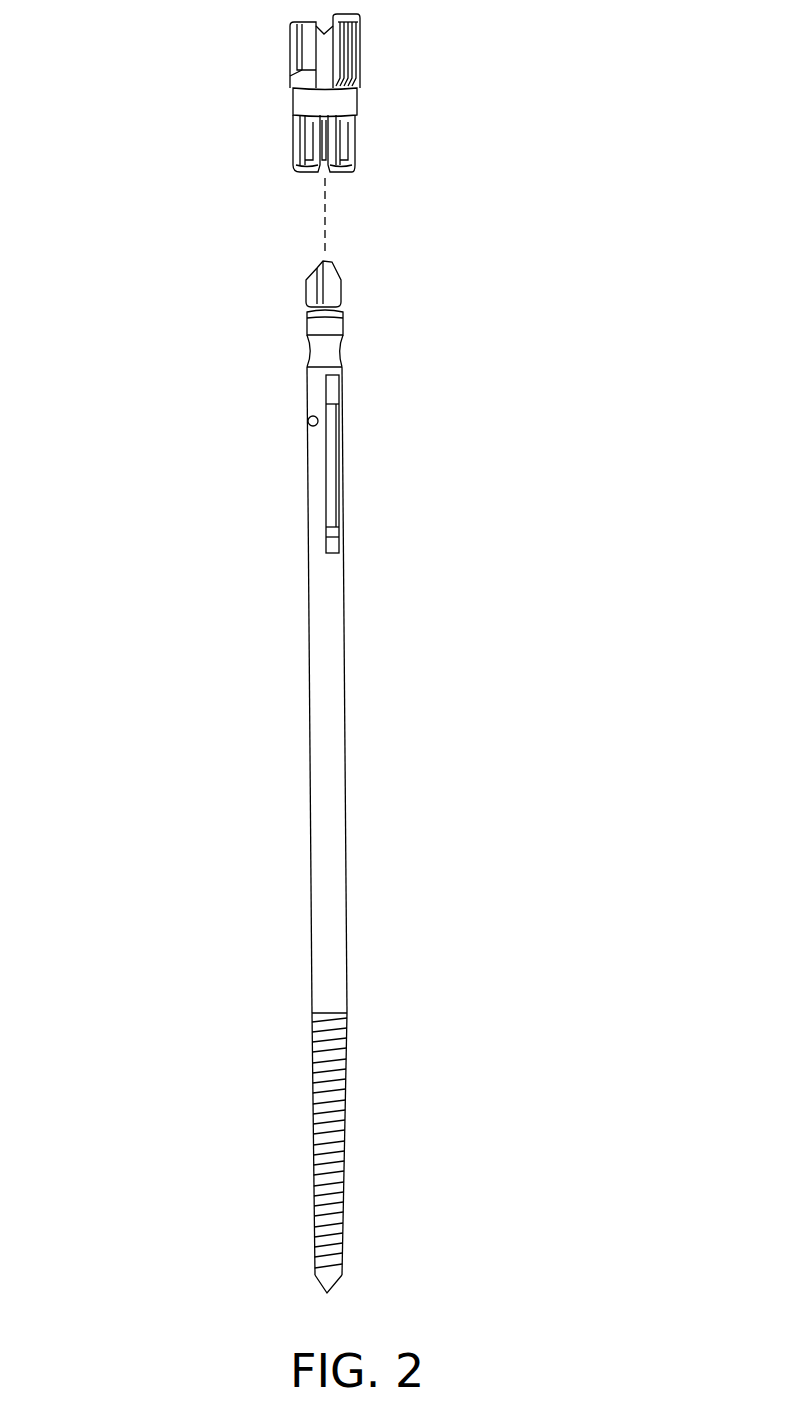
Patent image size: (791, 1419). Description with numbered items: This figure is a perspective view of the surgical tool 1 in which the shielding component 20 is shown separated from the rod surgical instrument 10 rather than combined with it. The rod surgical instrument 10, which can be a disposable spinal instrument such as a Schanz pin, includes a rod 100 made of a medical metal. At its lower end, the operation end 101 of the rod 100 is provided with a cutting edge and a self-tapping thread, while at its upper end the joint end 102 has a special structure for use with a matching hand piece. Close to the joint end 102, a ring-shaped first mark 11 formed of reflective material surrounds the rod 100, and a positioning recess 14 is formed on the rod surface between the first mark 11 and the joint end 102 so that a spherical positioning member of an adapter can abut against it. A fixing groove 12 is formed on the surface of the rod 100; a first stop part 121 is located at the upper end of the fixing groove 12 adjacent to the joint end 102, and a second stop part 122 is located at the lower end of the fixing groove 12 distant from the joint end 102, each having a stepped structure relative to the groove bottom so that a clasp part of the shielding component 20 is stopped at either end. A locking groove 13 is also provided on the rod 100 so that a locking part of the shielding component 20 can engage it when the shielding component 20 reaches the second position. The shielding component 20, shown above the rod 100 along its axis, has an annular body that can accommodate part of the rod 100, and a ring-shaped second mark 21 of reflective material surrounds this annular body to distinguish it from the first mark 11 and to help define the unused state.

The surgical tool 1 is at (99, 92).
The rod surgical instrument 10 is at (361, 687).
The rod 100 is at (332, 820).
The operation end 101 is at (332, 1230).
The joint end 102 is at (337, 268).
The first mark 11 is at (330, 323).
The fixing groove 12 is at (340, 466).
The first stop part 121 is at (333, 388).
The second stop part 122 is at (333, 543).
The locking groove 13 is at (306, 421).
The positioning recess 14 is at (320, 352).
The shielding component 20 is at (359, 102).
The second mark 21 is at (305, 100).